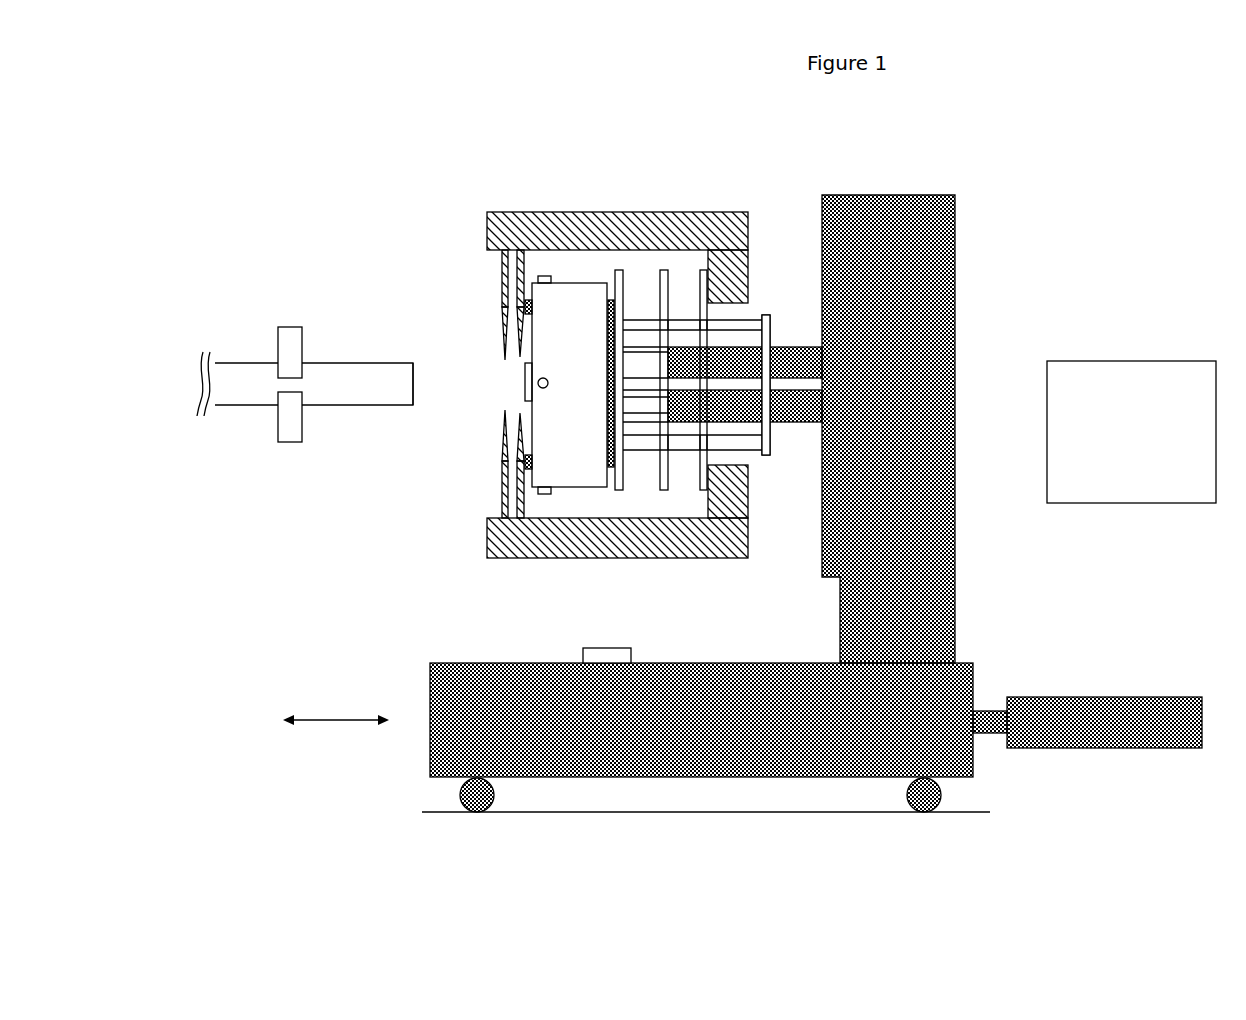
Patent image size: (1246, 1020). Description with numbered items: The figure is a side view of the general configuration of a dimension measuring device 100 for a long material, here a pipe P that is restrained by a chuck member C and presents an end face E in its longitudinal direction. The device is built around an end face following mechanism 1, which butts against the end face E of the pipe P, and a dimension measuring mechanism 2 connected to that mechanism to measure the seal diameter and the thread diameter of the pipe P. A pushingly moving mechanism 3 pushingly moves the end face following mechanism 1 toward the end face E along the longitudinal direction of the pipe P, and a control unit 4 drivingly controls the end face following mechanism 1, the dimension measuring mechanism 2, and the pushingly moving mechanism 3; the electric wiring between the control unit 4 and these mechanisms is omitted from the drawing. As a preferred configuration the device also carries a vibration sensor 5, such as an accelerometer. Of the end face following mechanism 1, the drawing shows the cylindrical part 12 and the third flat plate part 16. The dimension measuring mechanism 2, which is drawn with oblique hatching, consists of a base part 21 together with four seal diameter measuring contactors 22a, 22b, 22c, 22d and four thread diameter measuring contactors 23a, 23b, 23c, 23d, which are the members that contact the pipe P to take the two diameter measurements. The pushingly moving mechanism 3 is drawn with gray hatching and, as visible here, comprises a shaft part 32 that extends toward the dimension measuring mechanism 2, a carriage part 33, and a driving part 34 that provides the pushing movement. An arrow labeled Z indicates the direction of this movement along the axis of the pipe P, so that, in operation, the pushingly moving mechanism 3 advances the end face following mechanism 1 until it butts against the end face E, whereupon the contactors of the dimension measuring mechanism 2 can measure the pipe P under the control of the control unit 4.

The dimension measuring device 100 is at (848, 164).
The end face following mechanism 1 is at (500, 386).
The dimension measuring mechanism 2 is at (628, 200).
The pushingly moving mechanism 3 is at (982, 364).
The control unit 4 is at (1131, 432).
The vibration sensor 5 is at (603, 655).
The cylindrical part 12 is at (565, 303).
The third flat plate part 16 is at (700, 272).
The base part 21 is at (718, 228).
The seal diameter measuring contactor 22a is at (508, 237).
The seal diameter measuring contactor 22b is at (517, 533).
The seal diameter measuring contactor 22c is at (521, 518).
The seal diameter measuring contactor 22d is at (521, 250).
The thread diameter measuring contactor 23a is at (448, 267).
The thread diameter measuring contactor 23b is at (454, 505).
The thread diameter measuring contactor 23c is at (500, 482).
The thread diameter measuring contactor 23d is at (499, 300).
The shaft part 32 is at (803, 365).
The carriage part 33 is at (930, 572).
The driving part 34 is at (1085, 712).
The pipe P is at (345, 380).
The chuck member C is at (290, 348).
The end face E is at (417, 378).
The Z direction Z is at (323, 721).